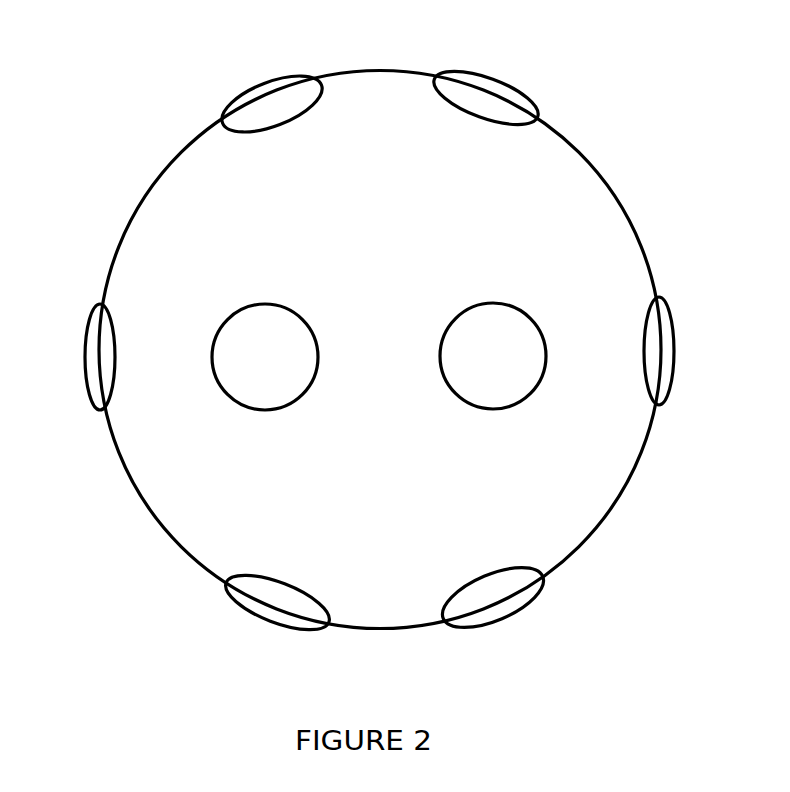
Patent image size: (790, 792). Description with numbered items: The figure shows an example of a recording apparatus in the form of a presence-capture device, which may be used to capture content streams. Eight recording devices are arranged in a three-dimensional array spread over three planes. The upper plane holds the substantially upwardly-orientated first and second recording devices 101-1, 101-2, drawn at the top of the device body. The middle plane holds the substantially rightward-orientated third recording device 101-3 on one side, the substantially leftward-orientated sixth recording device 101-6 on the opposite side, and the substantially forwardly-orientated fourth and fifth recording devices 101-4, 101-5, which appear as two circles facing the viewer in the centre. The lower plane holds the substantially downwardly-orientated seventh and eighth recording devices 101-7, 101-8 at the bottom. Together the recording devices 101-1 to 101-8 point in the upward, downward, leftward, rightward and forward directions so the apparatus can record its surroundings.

The first recording device 101-1 is at (287, 80).
The second recording device 101-2 is at (478, 88).
The third recording device 101-3 is at (97, 342).
The fourth recording device 101-4 is at (250, 327).
The fifth recording device 101-5 is at (482, 325).
The sixth recording device 101-6 is at (659, 320).
The seventh recording device 101-7 is at (509, 596).
The eighth recording device 101-8 is at (308, 618).